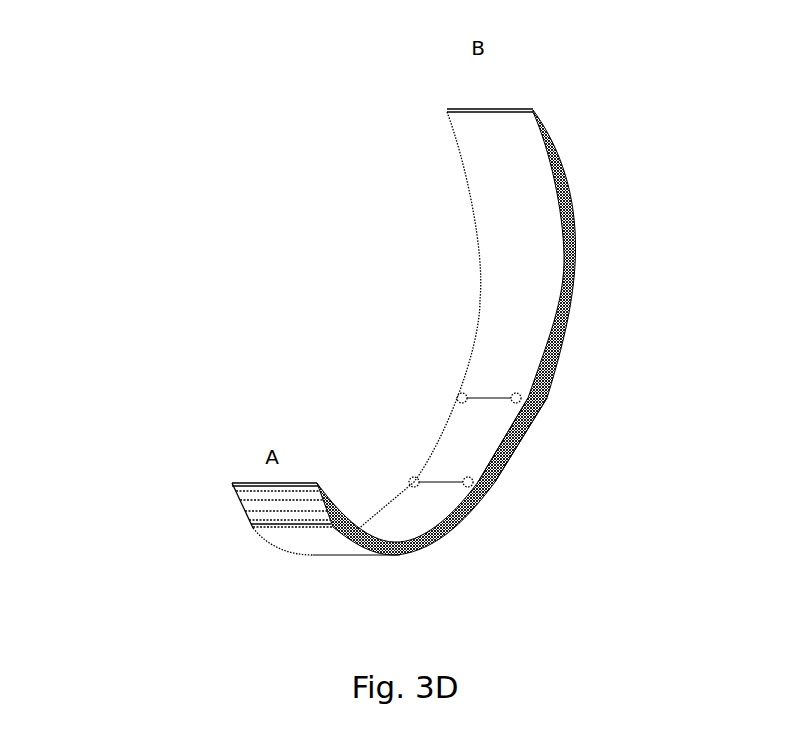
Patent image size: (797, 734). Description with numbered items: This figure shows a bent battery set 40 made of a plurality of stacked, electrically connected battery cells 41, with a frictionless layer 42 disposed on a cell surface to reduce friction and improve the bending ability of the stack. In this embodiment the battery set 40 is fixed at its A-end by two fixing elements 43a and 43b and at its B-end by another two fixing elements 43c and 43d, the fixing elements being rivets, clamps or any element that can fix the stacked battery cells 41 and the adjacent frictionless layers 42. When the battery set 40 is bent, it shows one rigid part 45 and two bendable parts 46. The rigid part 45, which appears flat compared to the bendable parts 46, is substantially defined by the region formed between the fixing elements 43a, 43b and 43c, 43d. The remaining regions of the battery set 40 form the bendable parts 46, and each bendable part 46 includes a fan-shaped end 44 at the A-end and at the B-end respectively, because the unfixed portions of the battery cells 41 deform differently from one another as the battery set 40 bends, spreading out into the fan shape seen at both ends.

The battery set 40 is at (163, 222).
The battery cell 41 is at (255, 528).
The frictionless layer 42 is at (250, 492).
The fixing element 43a is at (472, 484).
The fixing element 43b is at (409, 483).
The fixing element 43c is at (521, 396).
The fixing element 43d is at (458, 396).
The fan-shaped end 44 is at (207, 482).
The rigid part 45 is at (508, 497).
The bendable part 46 is at (637, 110).